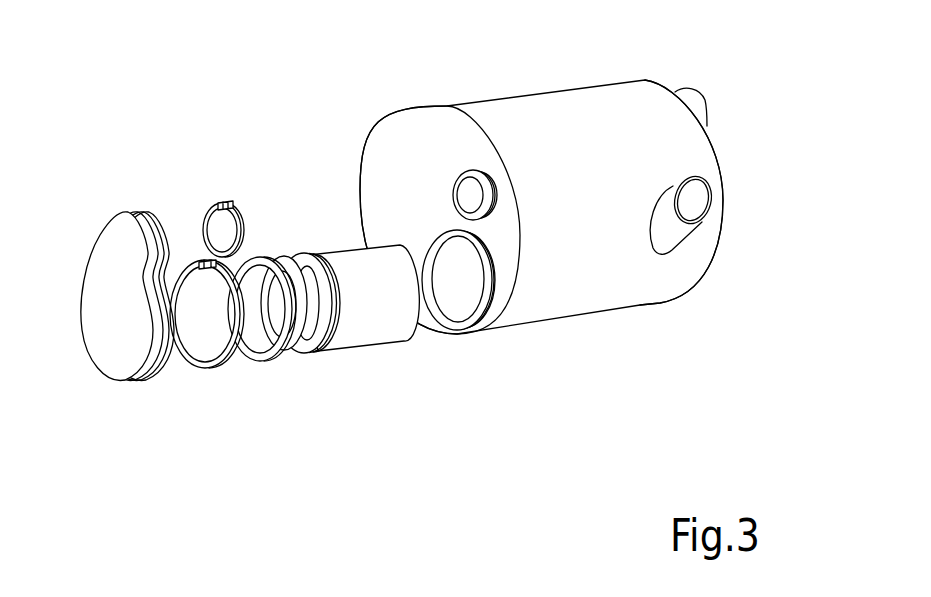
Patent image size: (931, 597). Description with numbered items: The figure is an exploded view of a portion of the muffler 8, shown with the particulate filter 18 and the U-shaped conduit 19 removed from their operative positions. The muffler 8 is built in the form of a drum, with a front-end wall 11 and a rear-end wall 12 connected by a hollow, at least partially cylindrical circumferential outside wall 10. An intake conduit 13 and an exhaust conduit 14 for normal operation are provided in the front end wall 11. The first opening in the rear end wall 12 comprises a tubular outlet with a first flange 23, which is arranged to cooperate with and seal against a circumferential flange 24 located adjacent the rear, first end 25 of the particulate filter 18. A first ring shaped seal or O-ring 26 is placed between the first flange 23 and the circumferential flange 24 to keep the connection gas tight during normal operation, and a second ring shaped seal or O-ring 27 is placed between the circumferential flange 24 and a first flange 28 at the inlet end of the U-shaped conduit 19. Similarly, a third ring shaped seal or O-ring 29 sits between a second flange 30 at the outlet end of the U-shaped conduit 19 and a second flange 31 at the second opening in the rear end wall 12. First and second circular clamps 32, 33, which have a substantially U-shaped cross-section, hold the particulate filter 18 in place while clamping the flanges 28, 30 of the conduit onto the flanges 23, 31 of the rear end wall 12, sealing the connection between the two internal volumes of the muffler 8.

The muffler 8 is at (417, 245).
The circumferential outside wall 10 is at (553, 213).
The front-end wall 11 is at (703, 294).
The rear-end wall 12 is at (384, 159).
The intake conduit 13 is at (738, 213).
The exhaust conduit 14 is at (726, 100).
The particulate filter 18 is at (368, 333).
The U-shaped conduit 19 is at (114, 298).
The first flange 23 is at (457, 326).
The circumferential flange 24 is at (320, 350).
The first end 25 is at (296, 347).
The first ring shaped seal 26 is at (361, 309).
The second ring shaped seal 27 is at (267, 360).
The first flange 28 is at (162, 374).
The third ring shaped seal 29 is at (170, 227).
The second flange 30 is at (158, 210).
The second flange 31 is at (462, 172).
The first circular clamp 32 is at (218, 367).
The second circular clamp 33 is at (231, 203).